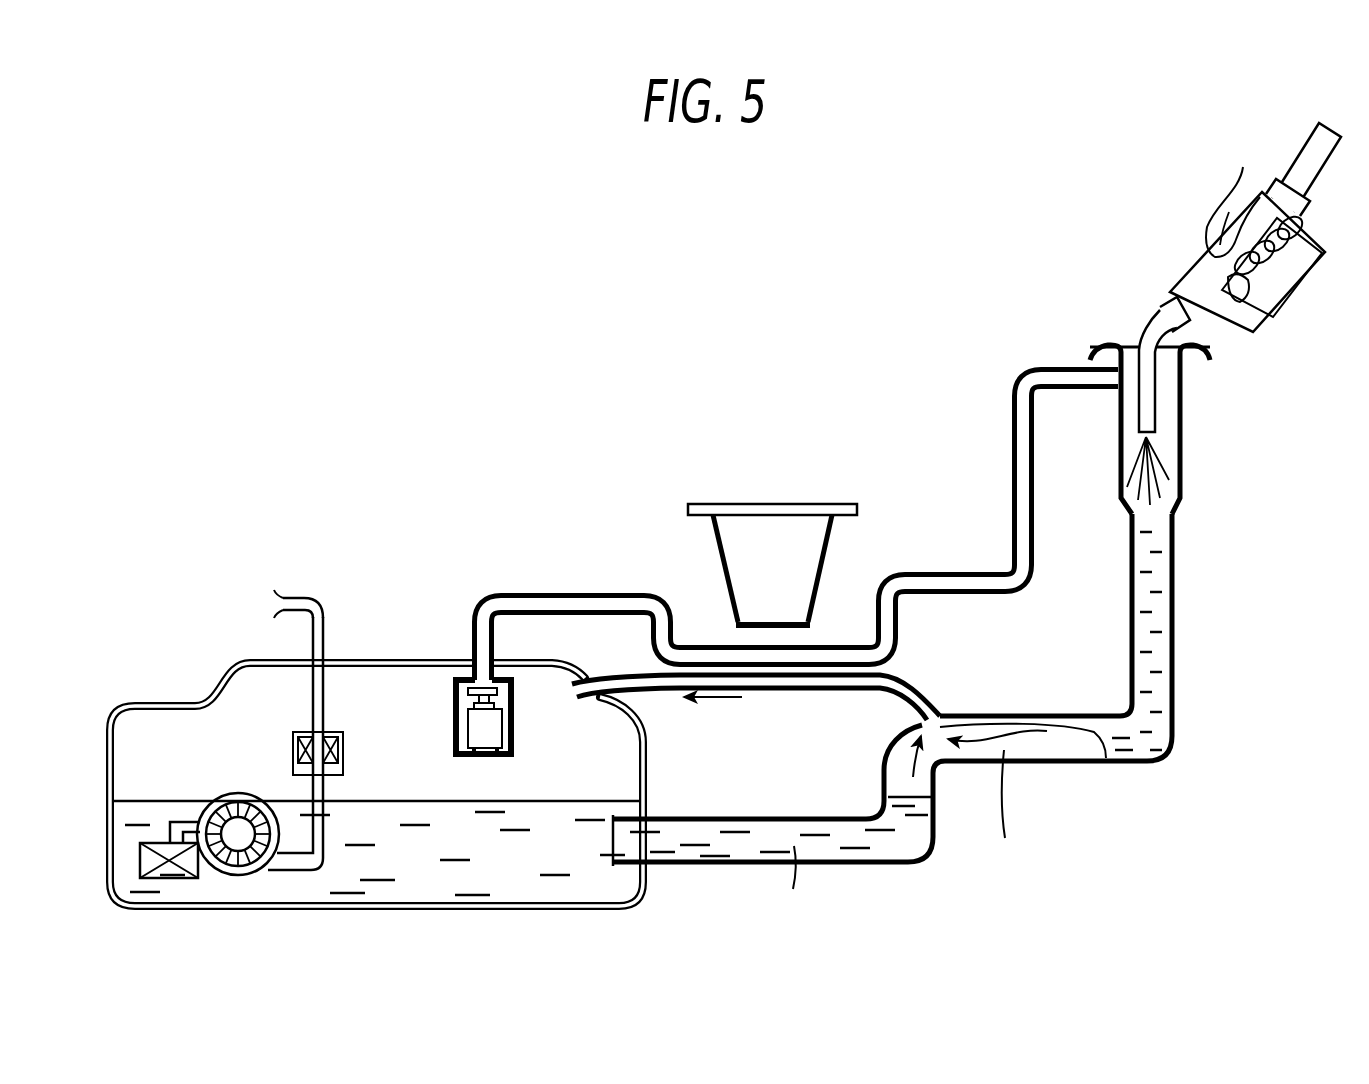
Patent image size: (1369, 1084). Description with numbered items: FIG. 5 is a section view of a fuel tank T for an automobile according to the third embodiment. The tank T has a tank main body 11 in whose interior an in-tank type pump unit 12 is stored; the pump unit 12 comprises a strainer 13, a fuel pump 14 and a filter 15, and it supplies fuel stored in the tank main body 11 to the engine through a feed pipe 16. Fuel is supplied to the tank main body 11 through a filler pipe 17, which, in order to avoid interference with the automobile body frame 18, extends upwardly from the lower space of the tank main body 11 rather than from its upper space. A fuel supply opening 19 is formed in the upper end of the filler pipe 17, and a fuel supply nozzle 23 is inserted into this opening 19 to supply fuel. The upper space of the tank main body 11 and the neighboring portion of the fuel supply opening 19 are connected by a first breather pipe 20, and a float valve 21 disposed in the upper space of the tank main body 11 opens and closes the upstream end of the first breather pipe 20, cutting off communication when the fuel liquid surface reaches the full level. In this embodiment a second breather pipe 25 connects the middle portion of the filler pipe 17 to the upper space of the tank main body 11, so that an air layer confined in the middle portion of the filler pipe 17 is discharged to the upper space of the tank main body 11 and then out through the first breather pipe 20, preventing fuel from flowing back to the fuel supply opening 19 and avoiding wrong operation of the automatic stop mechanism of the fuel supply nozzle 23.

The tank main body 11 is at (213, 684).
The pump unit 12 is at (225, 799).
The strainer 13 is at (140, 861).
The fuel pump 14 is at (240, 820).
The filter 15 is at (338, 732).
The feed pipe 16 is at (291, 598).
The filler pipe 17 is at (1056, 766).
The automobile body frame 18 is at (830, 552).
The fuel supply opening 19 is at (1197, 355).
The first breather pipe 20 is at (575, 592).
The float valve 21 is at (445, 687).
The fuel supply nozzle 23 is at (1190, 277).
The second breather pipe 25 is at (766, 697).
The fuel tank T is at (361, 598).